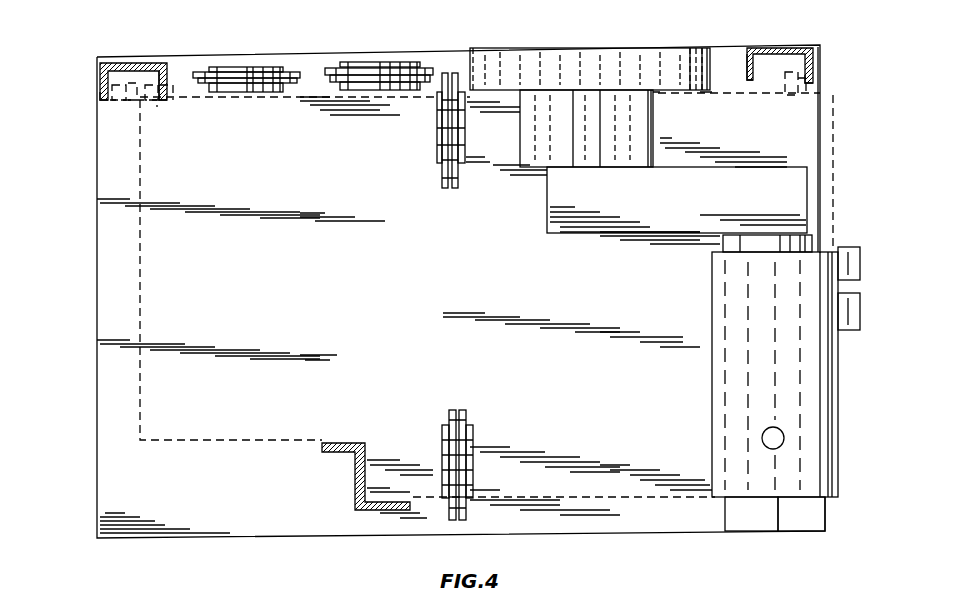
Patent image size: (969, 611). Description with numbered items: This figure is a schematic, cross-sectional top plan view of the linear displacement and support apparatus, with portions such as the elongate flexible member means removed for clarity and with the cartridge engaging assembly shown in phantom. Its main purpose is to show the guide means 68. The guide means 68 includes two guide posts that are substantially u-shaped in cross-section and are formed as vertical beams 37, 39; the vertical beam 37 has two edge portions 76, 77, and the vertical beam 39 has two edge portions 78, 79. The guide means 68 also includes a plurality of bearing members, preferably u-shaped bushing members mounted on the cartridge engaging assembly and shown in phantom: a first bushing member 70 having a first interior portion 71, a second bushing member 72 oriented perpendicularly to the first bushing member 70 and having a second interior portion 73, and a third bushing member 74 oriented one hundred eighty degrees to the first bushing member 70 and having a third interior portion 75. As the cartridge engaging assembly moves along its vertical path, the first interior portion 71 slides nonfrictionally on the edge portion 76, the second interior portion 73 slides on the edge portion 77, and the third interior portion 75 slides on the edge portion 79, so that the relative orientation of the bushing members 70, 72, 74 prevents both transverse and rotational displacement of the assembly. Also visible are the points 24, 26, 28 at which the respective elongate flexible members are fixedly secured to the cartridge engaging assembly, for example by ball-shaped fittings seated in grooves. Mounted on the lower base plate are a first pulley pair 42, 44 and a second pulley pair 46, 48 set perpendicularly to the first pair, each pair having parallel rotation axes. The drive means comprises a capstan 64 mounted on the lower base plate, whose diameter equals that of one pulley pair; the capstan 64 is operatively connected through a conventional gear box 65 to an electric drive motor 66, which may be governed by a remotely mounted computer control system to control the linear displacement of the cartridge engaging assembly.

The attachment point 24 is at (467, 498).
The attachment point 26 is at (191, 99).
The attachment point 28 is at (710, 94).
The vertical beam 37 is at (118, 62).
The vertical beam 39 is at (760, 48).
The pulley member 42 is at (473, 440).
The pulley member 44 is at (437, 152).
The pulley member 46 is at (248, 75).
The pulley member 48 is at (350, 68).
The capstan 64 is at (602, 60).
The gear box 65 is at (642, 222).
The electric drive motor 66 is at (717, 340).
The guide means 68 is at (90, 40).
The first bushing member 70 is at (140, 108).
The first interior portion 71 is at (128, 112).
The second bushing member 72 is at (173, 100).
The second interior portion 73 is at (160, 102).
The third bushing member 74 is at (800, 84).
The third interior portion 75 is at (787, 78).
The edge portion 76 is at (104, 100).
The edge portion 77 is at (166, 63).
The edge portion 78 is at (747, 70).
The edge portion 79 is at (813, 82).